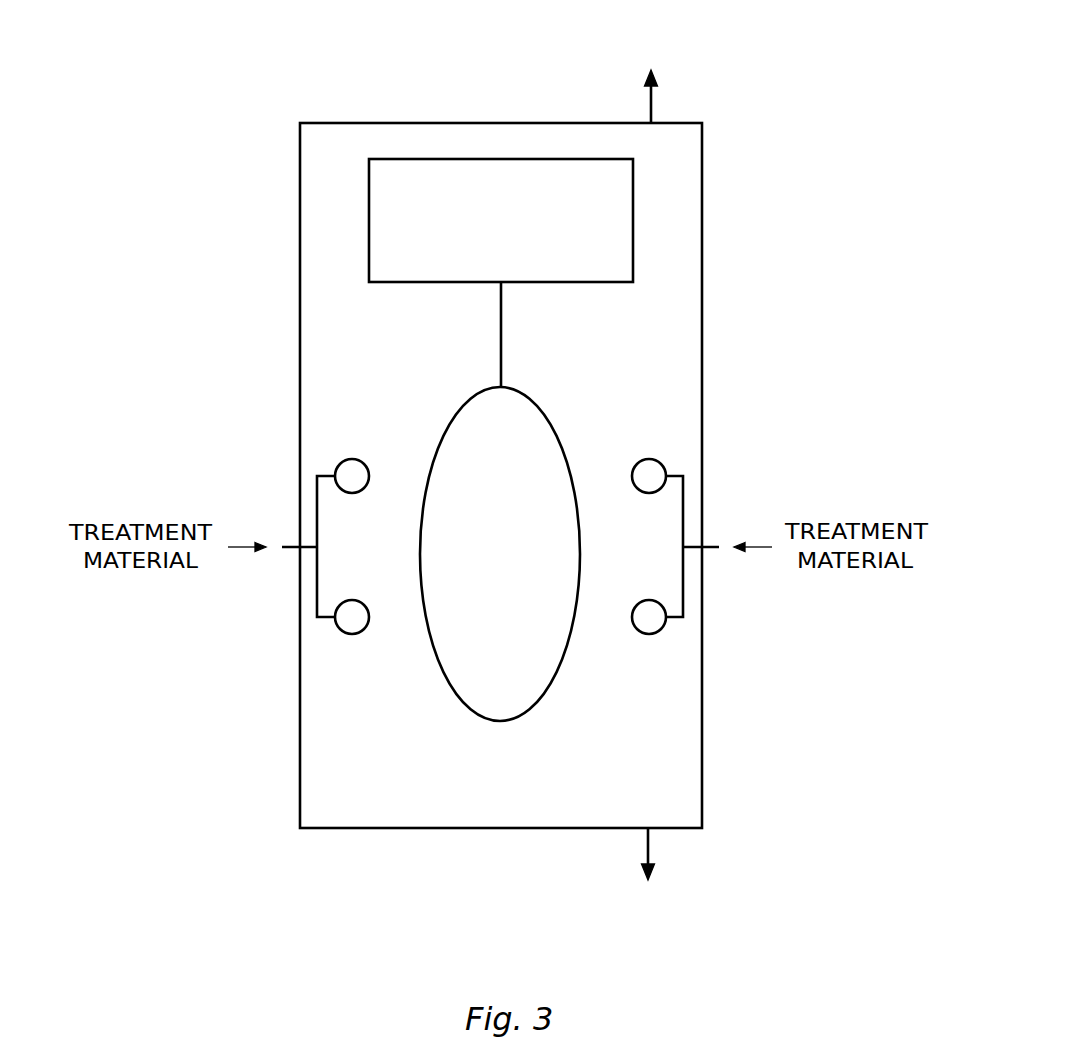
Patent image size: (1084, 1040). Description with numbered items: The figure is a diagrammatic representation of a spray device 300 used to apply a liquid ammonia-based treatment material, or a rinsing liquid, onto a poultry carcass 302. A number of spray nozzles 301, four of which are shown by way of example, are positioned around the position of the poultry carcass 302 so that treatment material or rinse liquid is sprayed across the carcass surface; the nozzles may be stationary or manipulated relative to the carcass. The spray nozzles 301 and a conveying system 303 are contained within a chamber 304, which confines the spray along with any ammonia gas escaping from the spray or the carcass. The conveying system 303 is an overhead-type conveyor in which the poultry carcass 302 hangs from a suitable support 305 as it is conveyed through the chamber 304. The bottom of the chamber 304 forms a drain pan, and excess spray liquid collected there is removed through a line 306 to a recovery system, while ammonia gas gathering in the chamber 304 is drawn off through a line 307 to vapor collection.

The spray device 300 is at (312, 884).
The spray nozzles 301 is at (352, 459).
The poultry carcass 302 is at (520, 569).
The conveying system 303 is at (481, 247).
The chamber 304 is at (703, 310).
The support 305 is at (501, 340).
The line 306 is at (651, 845).
The line 307 is at (653, 105).